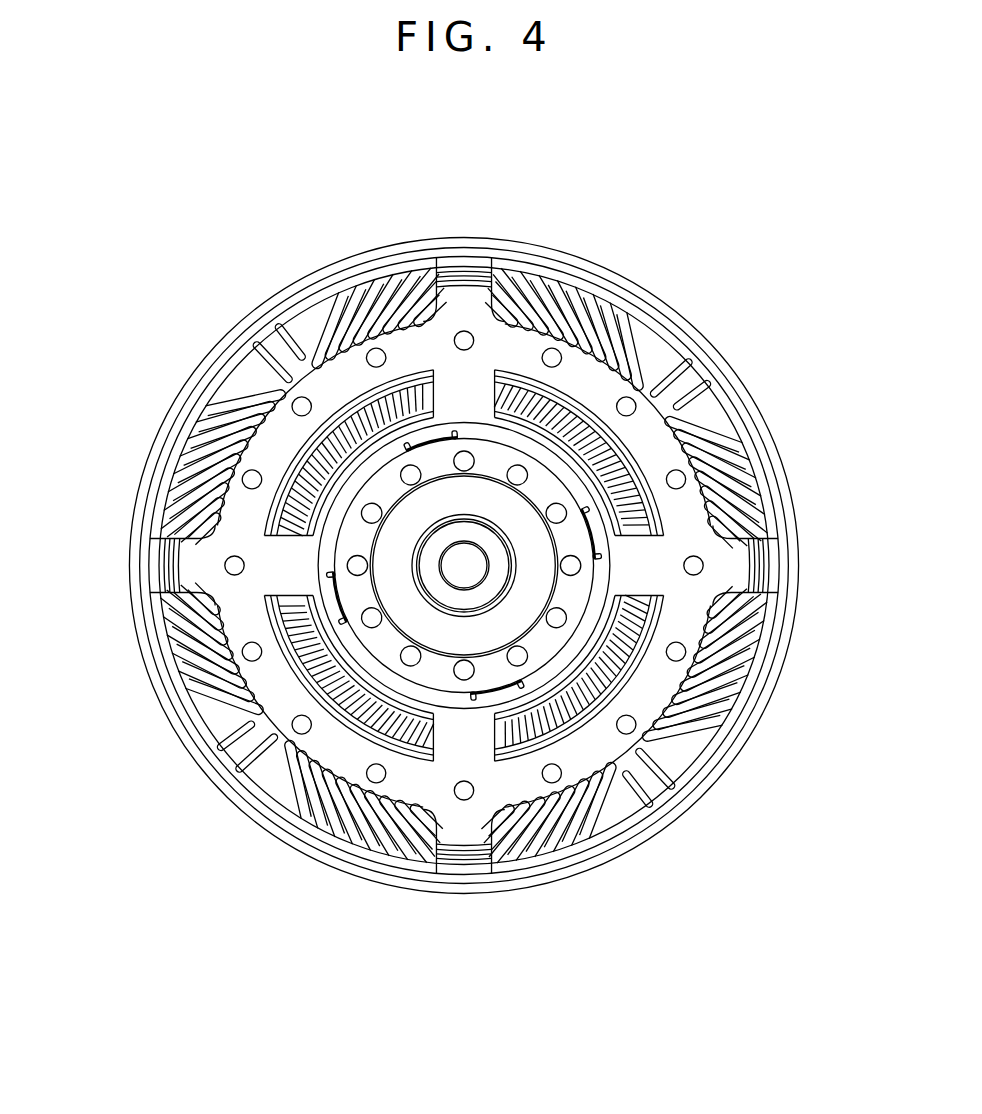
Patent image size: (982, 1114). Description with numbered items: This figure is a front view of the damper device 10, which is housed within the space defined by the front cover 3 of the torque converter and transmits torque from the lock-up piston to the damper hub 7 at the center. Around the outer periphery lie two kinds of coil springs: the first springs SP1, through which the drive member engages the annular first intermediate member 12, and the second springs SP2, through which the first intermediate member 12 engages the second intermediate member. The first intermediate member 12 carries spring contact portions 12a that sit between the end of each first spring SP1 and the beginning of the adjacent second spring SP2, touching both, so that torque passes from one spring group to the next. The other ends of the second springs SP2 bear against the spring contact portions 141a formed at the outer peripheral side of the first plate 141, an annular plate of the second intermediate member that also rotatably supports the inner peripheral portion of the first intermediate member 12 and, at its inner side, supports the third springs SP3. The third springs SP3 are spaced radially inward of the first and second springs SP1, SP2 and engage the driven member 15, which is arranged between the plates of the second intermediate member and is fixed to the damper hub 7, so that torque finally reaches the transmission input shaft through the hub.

The damper device 10 is at (688, 150).
The front cover 3 is at (545, 248).
The first intermediate member 12 is at (176, 447).
The spring contact portions 12a is at (267, 342).
The first plate 141 is at (417, 347).
The spring contact portions 141a is at (458, 305).
The first springs SP1 is at (314, 325).
The second springs SP2 is at (210, 420).
The third springs SP3 is at (278, 531).
The driven member 15 is at (436, 668).
The damper hub 7 is at (498, 565).